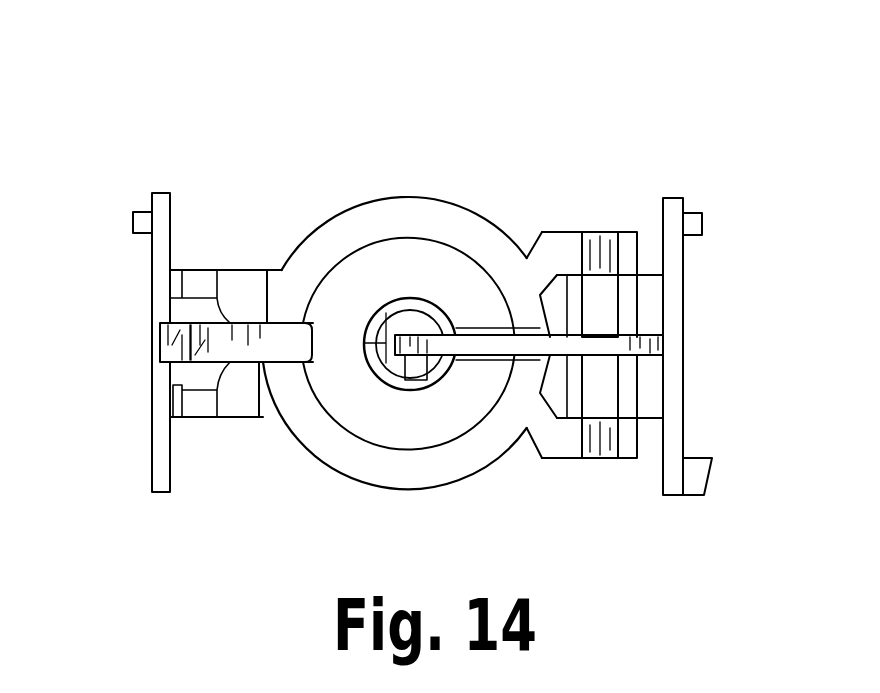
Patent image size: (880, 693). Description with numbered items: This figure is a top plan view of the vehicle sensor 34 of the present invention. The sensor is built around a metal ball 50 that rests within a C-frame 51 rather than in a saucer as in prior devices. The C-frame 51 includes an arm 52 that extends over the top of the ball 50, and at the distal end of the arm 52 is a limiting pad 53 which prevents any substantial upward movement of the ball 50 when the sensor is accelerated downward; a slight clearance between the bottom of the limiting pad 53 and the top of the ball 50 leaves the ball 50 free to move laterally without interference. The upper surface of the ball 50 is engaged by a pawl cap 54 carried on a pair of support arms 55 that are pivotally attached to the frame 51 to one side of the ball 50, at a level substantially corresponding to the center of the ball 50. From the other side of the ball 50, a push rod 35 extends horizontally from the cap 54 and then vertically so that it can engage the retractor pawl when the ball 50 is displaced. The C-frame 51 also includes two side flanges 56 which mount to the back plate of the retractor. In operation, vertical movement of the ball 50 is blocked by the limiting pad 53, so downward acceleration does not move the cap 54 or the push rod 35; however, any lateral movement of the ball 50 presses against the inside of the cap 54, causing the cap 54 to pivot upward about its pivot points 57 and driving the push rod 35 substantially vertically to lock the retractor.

The vehicle sensor 34 is at (407, 323).
The push rod 35 is at (180, 338).
The metal ball 50 is at (457, 473).
The C-frame 51 is at (243, 282).
The arm 52 is at (465, 345).
The limiting pad 53 is at (420, 318).
The pawl cap 54 is at (418, 258).
The support arms 55 is at (555, 248).
The side flanges 56 is at (162, 300).
The pivot points 57 is at (606, 235).